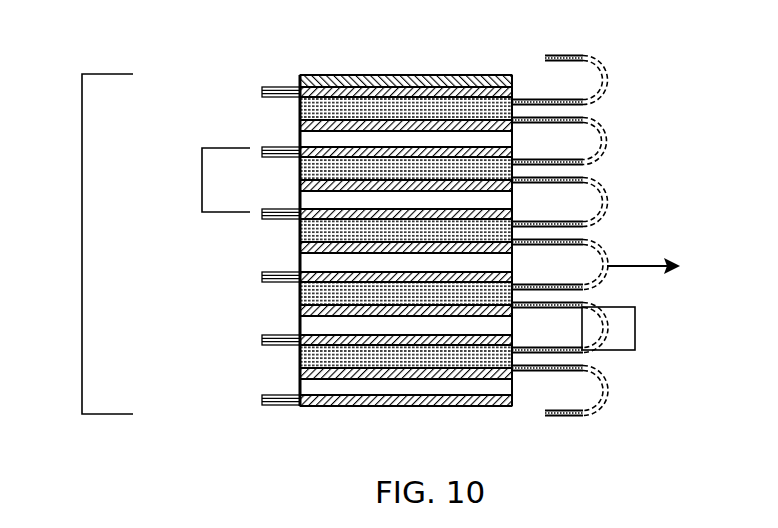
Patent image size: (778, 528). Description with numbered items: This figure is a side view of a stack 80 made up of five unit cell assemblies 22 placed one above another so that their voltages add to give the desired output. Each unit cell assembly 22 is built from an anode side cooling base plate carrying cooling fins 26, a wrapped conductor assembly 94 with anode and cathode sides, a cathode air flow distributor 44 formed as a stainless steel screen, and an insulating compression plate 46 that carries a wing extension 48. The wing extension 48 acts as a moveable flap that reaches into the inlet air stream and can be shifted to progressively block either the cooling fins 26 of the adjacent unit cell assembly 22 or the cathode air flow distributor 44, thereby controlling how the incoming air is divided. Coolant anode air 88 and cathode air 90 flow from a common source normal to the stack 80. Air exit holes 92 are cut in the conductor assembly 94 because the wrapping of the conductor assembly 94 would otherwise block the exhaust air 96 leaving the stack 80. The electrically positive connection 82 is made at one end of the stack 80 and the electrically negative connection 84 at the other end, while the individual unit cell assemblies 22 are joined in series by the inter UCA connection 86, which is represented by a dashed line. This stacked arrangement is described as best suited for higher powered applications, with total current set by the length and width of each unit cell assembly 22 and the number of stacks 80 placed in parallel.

The stack 80 is at (82, 213).
The wing extension 48 is at (263, 90).
The cathode air flow distributor 44 is at (298, 97).
The cooling fins 26 is at (298, 142).
The unit cell assembly 22 is at (202, 179).
The cathode air 90 is at (296, 228).
The coolant (anode) air 88 is at (296, 258).
The insulating compression plate 46 is at (513, 92).
The electrically positive connection 82 is at (565, 55).
The air exit holes 92 is at (604, 142).
The conductor assembly 94 is at (580, 183).
The exhaust air 96 is at (643, 275).
The inter UCA connection 86 is at (635, 328).
The electrically negative connection 84 is at (567, 413).